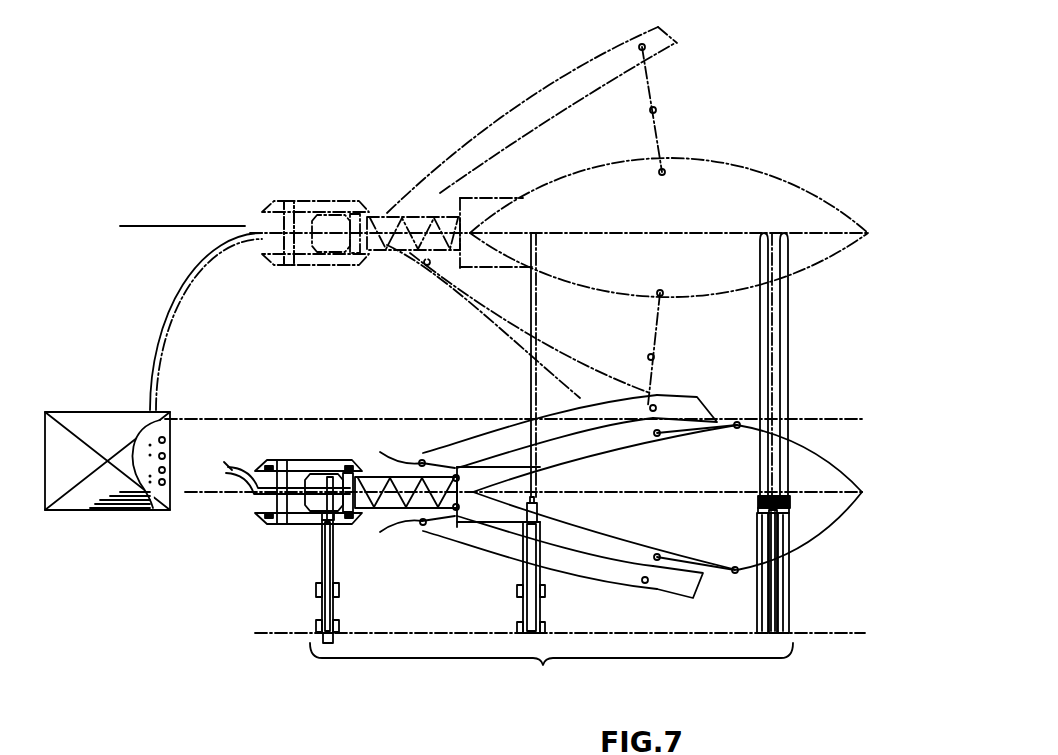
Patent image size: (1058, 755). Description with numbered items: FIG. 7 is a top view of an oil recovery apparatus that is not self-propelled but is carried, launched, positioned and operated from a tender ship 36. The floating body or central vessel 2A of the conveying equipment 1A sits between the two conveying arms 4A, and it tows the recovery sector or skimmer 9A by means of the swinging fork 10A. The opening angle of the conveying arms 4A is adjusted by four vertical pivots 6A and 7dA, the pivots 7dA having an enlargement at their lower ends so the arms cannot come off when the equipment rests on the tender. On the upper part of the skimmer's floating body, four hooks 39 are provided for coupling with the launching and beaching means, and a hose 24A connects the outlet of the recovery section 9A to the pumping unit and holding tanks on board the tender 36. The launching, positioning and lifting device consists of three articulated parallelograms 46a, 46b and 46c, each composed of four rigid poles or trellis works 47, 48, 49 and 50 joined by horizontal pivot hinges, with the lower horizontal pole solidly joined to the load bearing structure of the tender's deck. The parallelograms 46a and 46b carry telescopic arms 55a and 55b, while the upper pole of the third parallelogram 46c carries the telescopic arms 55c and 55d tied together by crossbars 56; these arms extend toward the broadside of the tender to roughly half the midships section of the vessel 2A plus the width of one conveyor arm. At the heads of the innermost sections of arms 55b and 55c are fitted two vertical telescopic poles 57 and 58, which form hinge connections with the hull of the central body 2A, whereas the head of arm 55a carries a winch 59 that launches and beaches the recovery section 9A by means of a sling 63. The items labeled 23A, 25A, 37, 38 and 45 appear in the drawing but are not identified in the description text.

The conveying equipment 1A is at (402, 205).
The floating body or central vessel 2A is at (775, 134).
The conveying arms 4A is at (497, 127).
The vertical pivots 6A is at (422, 460).
The vertical pivots 7dA is at (657, 397).
The recovery sector or skimmer 9A is at (308, 197).
The swinging fork 10A is at (375, 477).
The pivot bar 23A is at (292, 257).
The hose 24A is at (163, 295).
The control unit 25A is at (118, 368).
The tender ship 36 is at (835, 433).
The base 37 is at (545, 666).
The control panel 38 is at (172, 460).
The hooks 39 is at (267, 463).
The base plate 45 is at (385, 746).
The articulated parallelogram 46a is at (300, 553).
The articulated parallelogram 46b is at (525, 433).
The articulated parallelogram 46c is at (786, 433).
The rigid pole 47 is at (318, 607).
The rigid pole 48 is at (338, 590).
The rigid pole 49 is at (317, 590).
The rigid pole 50 is at (315, 627).
The telescopic arm 55a is at (323, 550).
The telescopic arm 55b is at (540, 532).
The telescopic arm 55c is at (758, 542).
The telescopic arm 55d is at (787, 543).
The crossbars 56 is at (767, 496).
The vertical telescopic pole 57 is at (533, 497).
The vertical telescopic pole 58 is at (787, 497).
The winch 59 is at (330, 484).
The sling 63 is at (290, 478).